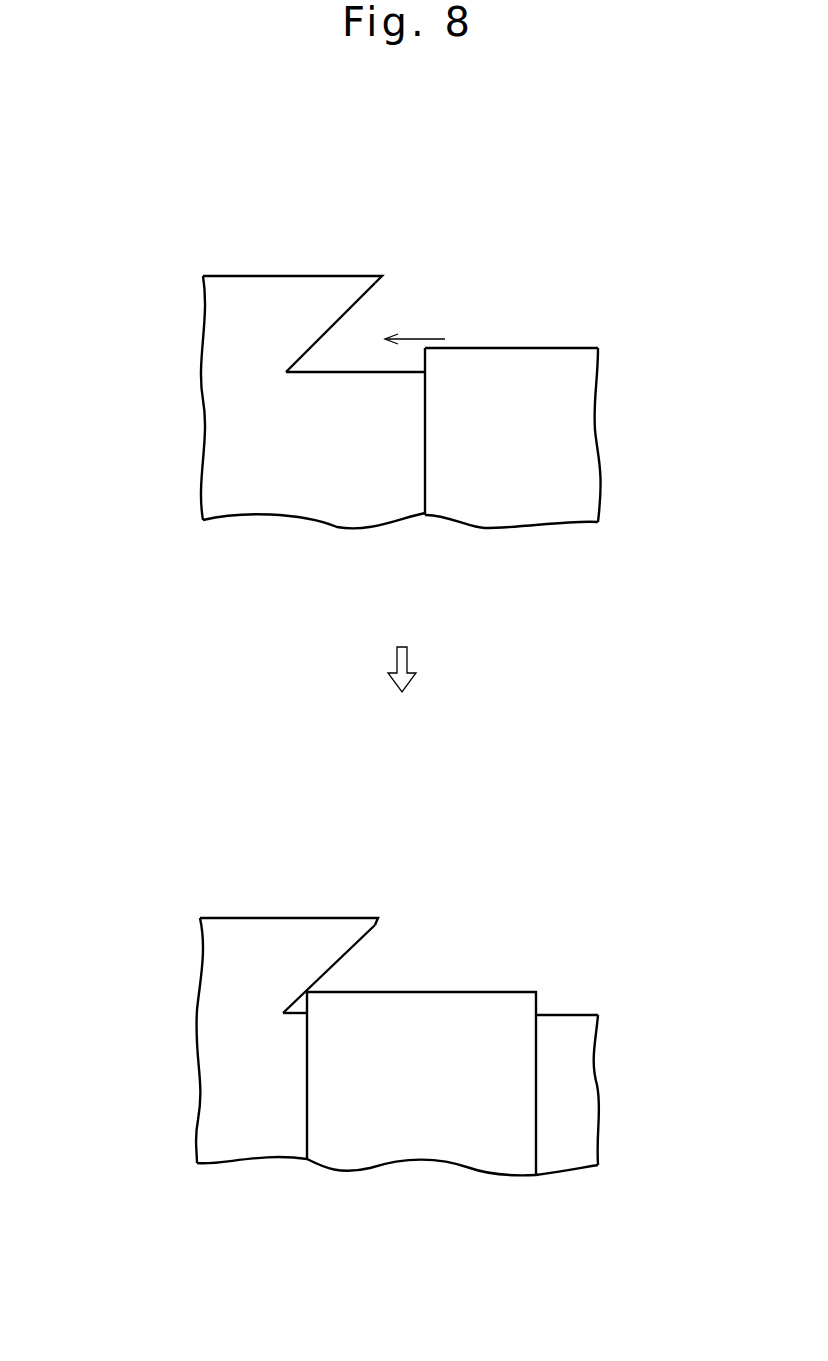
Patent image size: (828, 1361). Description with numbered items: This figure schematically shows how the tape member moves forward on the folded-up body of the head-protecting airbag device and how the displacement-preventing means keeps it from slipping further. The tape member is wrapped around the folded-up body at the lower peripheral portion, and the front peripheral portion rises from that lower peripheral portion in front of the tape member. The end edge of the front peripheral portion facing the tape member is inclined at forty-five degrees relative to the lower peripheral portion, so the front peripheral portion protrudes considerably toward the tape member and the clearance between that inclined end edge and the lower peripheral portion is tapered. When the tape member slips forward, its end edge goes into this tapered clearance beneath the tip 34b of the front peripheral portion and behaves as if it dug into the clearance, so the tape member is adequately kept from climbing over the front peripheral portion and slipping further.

The tip of engaging projection 34b is at (383, 276).